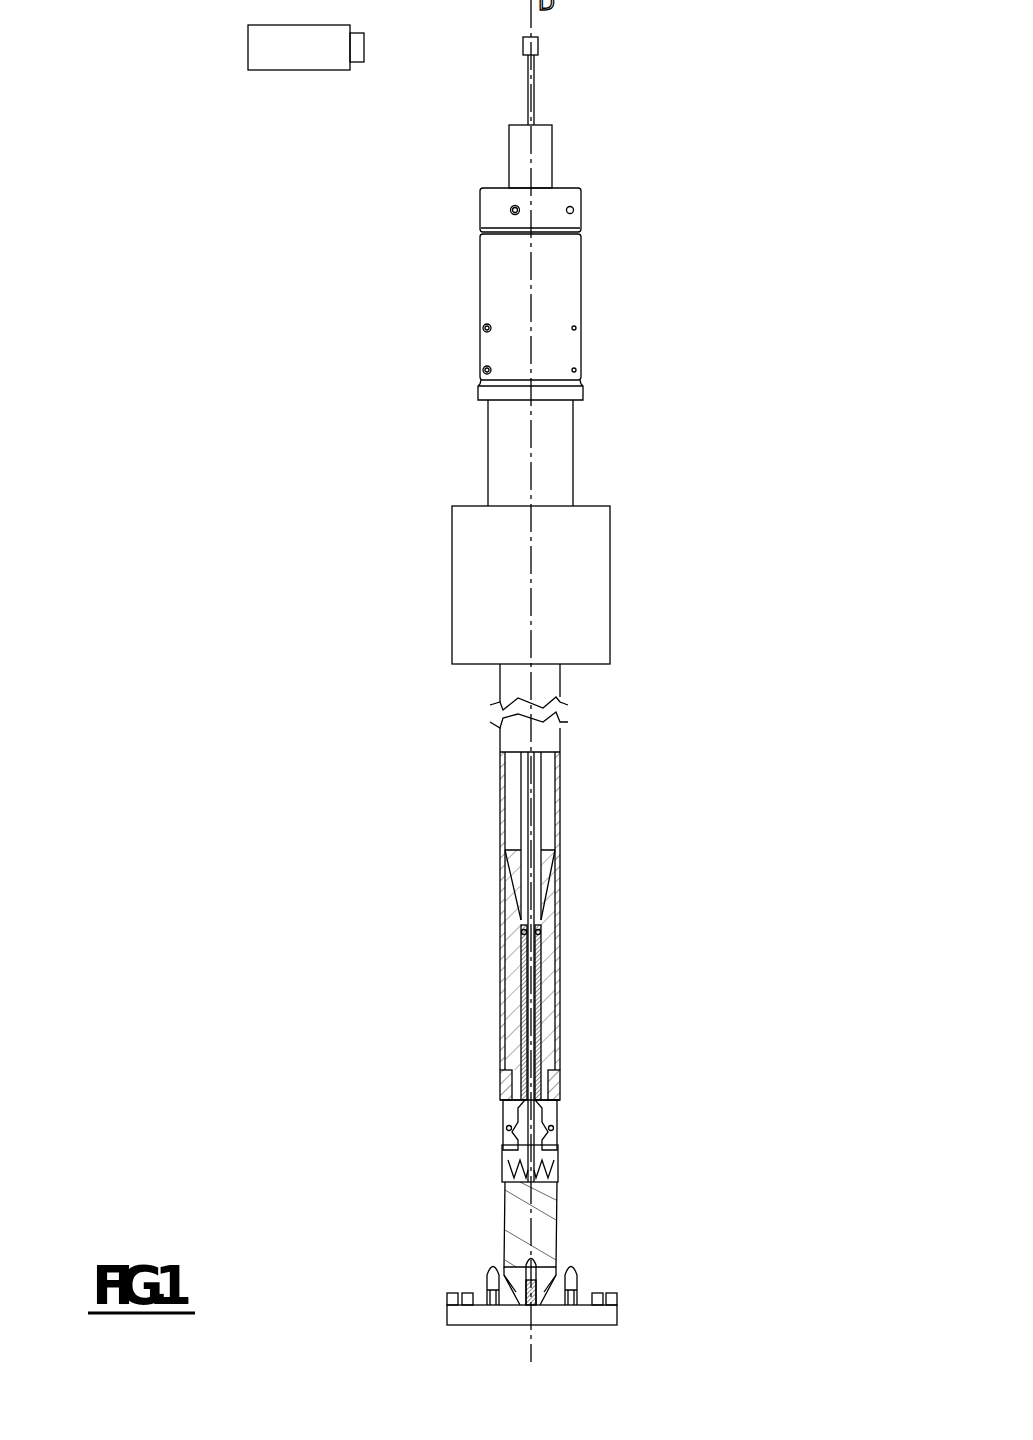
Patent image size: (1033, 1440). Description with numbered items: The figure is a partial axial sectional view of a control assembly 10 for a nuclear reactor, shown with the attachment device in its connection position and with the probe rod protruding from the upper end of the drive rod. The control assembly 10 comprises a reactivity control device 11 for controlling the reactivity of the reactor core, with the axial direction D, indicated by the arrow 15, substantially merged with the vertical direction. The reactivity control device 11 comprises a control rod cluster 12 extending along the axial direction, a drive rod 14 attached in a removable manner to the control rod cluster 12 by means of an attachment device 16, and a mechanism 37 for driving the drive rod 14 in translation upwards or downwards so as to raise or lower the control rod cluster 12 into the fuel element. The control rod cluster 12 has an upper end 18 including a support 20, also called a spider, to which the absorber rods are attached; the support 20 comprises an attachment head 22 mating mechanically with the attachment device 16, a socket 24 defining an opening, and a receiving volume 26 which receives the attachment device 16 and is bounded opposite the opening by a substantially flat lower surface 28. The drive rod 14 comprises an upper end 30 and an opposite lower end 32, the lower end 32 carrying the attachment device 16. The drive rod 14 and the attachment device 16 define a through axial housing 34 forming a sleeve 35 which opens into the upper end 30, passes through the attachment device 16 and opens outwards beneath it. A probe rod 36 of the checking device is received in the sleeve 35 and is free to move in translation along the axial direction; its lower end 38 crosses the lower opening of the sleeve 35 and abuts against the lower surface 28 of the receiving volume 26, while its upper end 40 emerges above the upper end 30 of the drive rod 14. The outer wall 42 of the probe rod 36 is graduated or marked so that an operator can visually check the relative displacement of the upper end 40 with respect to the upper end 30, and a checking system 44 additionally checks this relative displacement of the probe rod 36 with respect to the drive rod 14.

The control assembly 10 is at (632, 380).
The reactivity control device 11 is at (630, 688).
The control rod cluster 12 is at (428, 1185).
The drive rod 14 is at (410, 805).
The direction D indication 15 is at (703, 33).
The attachment device 16 is at (580, 1118).
The upper end 18 is at (560, 1195).
The support 20 is at (560, 1290).
The attachment head 22 is at (505, 1222).
The socket 24 is at (505, 1172).
The receiving volume 26 is at (505, 1173).
The lower surface 28 is at (560, 1167).
The upper end 30 is at (552, 158).
The lower end 32 is at (560, 1086).
The through axial housing 34 is at (540, 968).
The sleeve 35 is at (545, 873).
The probe rod 36 is at (535, 776).
The mechanism 37 is at (610, 578).
The lower end 38 is at (505, 1210).
The upper end 40 is at (538, 46).
The outer wall 42 is at (528, 80).
The checking system 44 is at (293, 62).